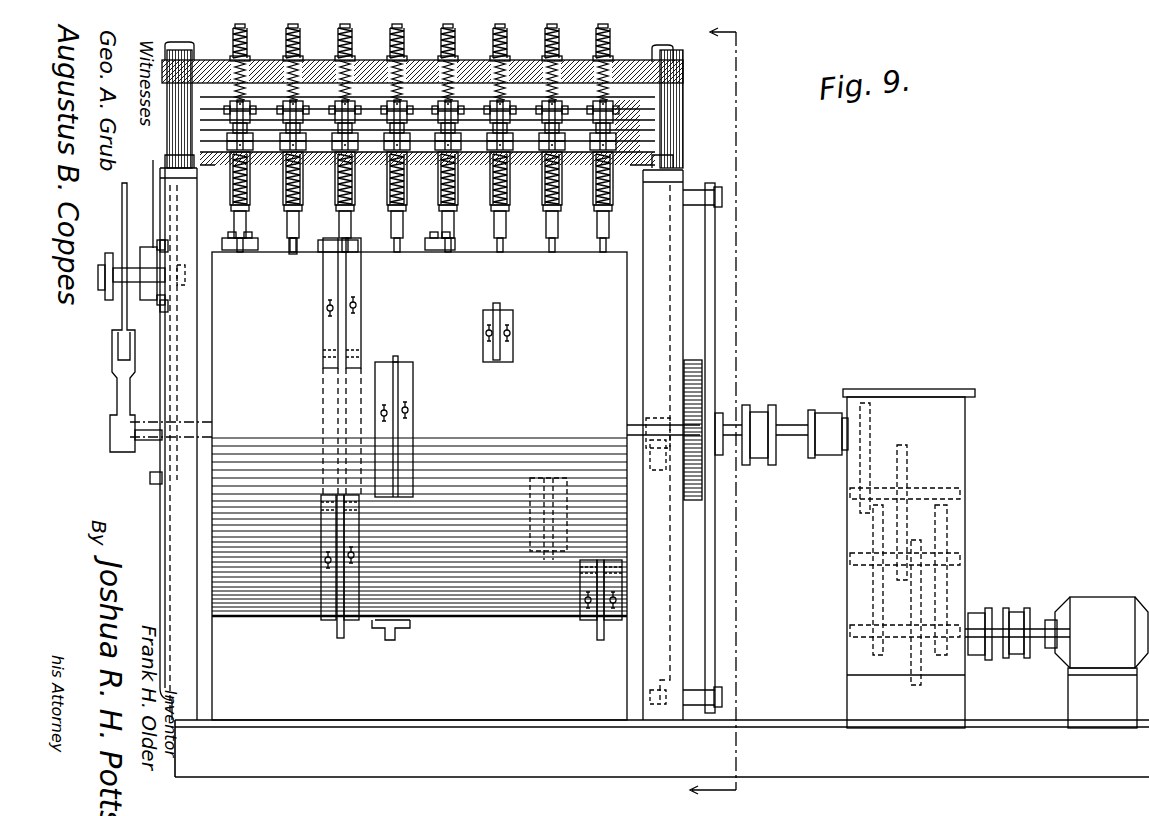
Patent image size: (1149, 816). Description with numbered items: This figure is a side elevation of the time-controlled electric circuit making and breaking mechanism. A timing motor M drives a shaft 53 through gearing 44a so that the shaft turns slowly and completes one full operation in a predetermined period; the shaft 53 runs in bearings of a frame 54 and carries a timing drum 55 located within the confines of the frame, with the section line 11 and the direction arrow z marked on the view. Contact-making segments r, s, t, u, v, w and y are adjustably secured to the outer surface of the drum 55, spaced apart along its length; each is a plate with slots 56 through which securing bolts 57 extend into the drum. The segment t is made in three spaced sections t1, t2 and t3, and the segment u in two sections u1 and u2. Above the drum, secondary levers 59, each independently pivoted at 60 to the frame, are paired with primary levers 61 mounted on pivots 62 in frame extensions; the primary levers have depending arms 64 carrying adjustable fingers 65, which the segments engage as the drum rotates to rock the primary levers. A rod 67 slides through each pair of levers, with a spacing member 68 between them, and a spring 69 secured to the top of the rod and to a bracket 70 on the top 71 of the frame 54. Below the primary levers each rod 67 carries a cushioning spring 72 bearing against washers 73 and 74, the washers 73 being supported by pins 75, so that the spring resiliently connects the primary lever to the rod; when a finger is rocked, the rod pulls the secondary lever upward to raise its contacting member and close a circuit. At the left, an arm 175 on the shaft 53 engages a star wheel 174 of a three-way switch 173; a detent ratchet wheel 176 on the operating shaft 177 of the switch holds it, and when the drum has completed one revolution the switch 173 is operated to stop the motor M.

The section line 11 is at (704, 412).
The gearing 44a is at (960, 527).
The shaft 53 is at (655, 420).
The frame 54 is at (220, 660).
The timing drum 55 is at (500, 618).
The slots 56 is at (515, 334).
The securing bolts 57 is at (486, 332).
The secondary levers 59 is at (508, 190).
The pivot 60 is at (560, 165).
The primary levers 61 is at (490, 158).
The pivots 62 is at (535, 158).
The depending arms 64 is at (560, 222).
The fingers 65 is at (610, 226).
The rod 67 is at (508, 208).
The spacing member 68 is at (615, 128).
The spring 69 is at (552, 45).
The bracket 70 is at (603, 45).
The top 71 is at (680, 72).
The cushioning springs 72 is at (560, 205).
The washers 73 is at (458, 210).
The washers 74 is at (440, 160).
The pins 75 is at (400, 222).
The three-way switch 173 is at (168, 282).
The star wheel 174 is at (125, 315).
The arm 175 is at (112, 392).
The detent ratchet wheel 176 is at (118, 300).
The operating shaft 177 is at (100, 282).
The motor M is at (1100, 600).
The contact-making segment r is at (240, 252).
The contact-making segment s is at (293, 254).
The contact-making segment v is at (440, 252).
The contact-making segment t is at (340, 640).
The segment section t1 is at (356, 298).
The segment section t2 is at (328, 632).
The segment section t3 is at (322, 385).
The contact-making segment u is at (385, 640).
The segment section u1 is at (412, 390).
The segment section u2 is at (400, 640).
The contact-making segment w is at (510, 312).
The contact-making segment y is at (597, 635).
The direction arrow z is at (62, 436).